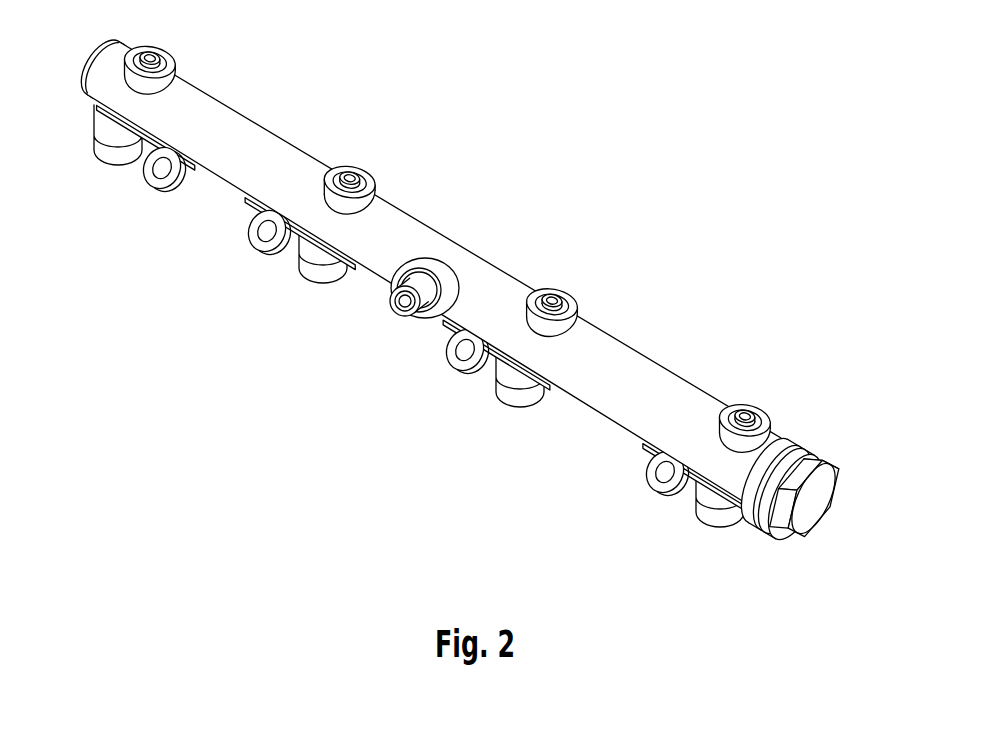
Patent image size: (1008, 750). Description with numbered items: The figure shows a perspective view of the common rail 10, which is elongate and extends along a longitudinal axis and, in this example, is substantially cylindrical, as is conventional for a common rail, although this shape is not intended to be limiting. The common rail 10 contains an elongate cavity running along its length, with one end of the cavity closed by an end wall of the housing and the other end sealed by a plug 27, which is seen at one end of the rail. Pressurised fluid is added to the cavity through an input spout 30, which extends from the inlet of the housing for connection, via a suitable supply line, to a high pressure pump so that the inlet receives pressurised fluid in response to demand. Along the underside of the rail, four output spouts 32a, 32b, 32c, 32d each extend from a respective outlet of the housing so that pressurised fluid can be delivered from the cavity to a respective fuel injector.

The common rail 10 is at (460, 326).
The plug 27 is at (802, 490).
The input spout 30 is at (410, 308).
The output spout 32a is at (113, 138).
The output spout 32b is at (313, 260).
The output spout 32c is at (512, 382).
The output spout 32d is at (715, 503).